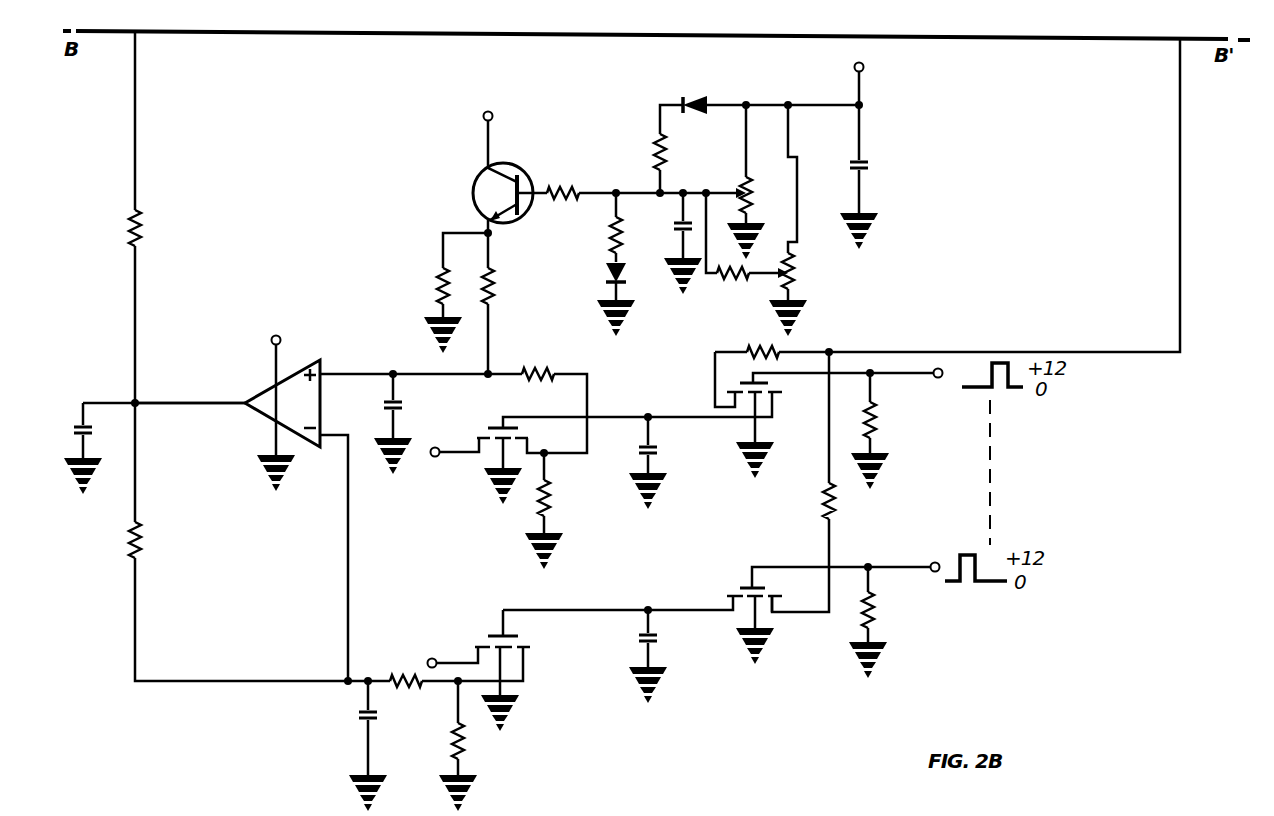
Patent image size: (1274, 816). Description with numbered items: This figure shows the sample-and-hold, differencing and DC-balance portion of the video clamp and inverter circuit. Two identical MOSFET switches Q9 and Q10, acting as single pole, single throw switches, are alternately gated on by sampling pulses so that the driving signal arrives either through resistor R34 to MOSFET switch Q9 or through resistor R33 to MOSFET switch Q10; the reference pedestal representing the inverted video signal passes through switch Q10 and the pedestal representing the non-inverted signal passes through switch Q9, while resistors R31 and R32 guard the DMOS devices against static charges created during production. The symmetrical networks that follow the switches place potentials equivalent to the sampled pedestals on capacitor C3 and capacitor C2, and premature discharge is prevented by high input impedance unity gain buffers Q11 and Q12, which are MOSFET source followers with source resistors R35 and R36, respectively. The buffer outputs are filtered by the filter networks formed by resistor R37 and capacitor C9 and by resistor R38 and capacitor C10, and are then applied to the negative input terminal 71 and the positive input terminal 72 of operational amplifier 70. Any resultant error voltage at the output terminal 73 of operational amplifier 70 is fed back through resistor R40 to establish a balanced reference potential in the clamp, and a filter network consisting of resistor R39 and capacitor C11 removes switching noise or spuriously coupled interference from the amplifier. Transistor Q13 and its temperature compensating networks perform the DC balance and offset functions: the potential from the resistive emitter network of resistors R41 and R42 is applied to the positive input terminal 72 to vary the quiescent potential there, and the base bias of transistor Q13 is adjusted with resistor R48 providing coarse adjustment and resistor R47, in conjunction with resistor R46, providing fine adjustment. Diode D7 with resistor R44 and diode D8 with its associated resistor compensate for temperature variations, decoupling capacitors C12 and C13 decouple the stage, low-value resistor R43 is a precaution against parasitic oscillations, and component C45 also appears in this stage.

The resistor R40 is at (155, 228).
The resistor R39 is at (155, 540).
The capacitor C11 is at (97, 448).
The operational amplifier 70 is at (283, 412).
The negative input terminal 71 is at (324, 436).
The positive input terminal 72 is at (324, 374).
The output terminal 73 is at (248, 402).
The capacitor C10 is at (408, 422).
The transistor Q13 is at (510, 161).
The resistor R42 is at (508, 303).
The resistor R41 is at (445, 293).
The resistor R43 is at (581, 182).
The resistor R44 is at (681, 149).
The diode D7 is at (771, 91).
The component C45 is at (598, 227).
The diode D8 is at (627, 299).
The decoupling capacitor C12 is at (672, 243).
The resistor R48 is at (760, 182).
The resistor R47 is at (805, 220).
The resistor R46 is at (747, 250).
The decoupling capacitor C13 is at (877, 144).
The resistor R38 is at (537, 399).
The unity gain buffer Q12 is at (534, 456).
The source resistor R36 is at (558, 511).
The capacitor C2 is at (657, 461).
The MOSFET switch Q10 is at (740, 383).
The resistor R33 is at (772, 340).
The resistor R32 is at (884, 429).
The resistor R34 is at (825, 482).
The MOSFET switch Q9 is at (721, 614).
The resistor R31 is at (883, 620).
The capacitor C3 is at (656, 654).
The unity gain buffer Q11 is at (494, 670).
The resistor R37 is at (424, 694).
The capacitor C9 is at (361, 746).
The source resistor R35 is at (473, 746).